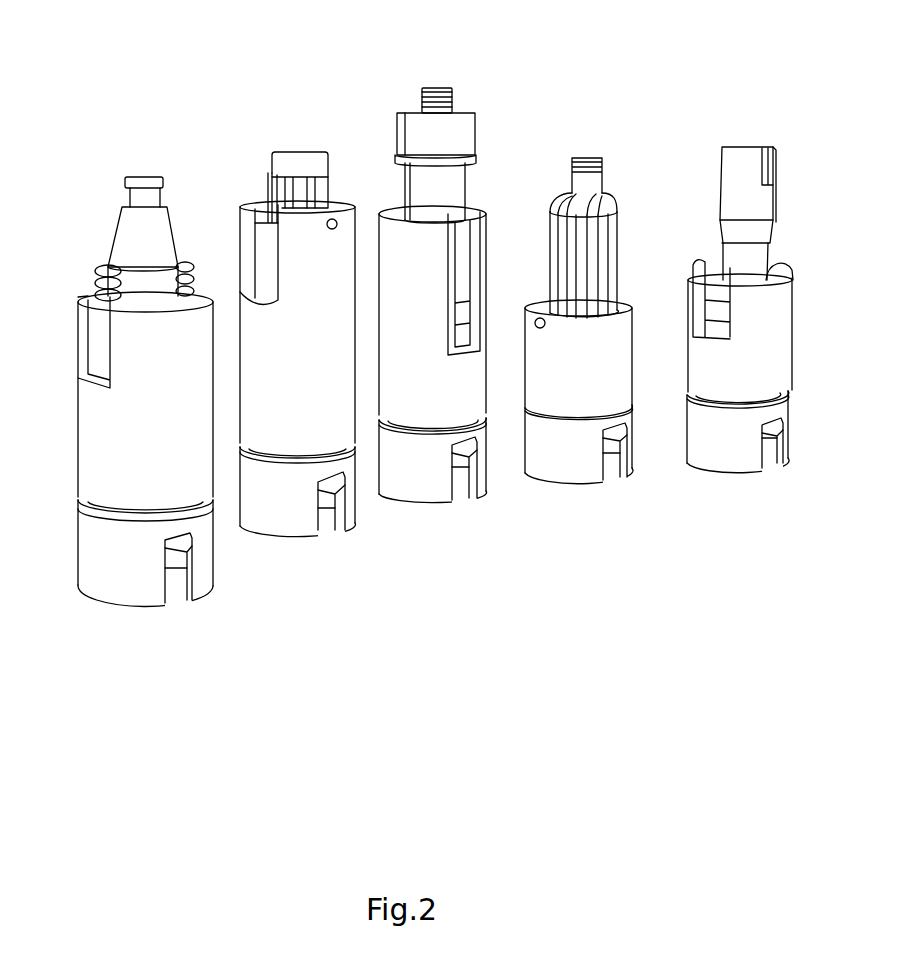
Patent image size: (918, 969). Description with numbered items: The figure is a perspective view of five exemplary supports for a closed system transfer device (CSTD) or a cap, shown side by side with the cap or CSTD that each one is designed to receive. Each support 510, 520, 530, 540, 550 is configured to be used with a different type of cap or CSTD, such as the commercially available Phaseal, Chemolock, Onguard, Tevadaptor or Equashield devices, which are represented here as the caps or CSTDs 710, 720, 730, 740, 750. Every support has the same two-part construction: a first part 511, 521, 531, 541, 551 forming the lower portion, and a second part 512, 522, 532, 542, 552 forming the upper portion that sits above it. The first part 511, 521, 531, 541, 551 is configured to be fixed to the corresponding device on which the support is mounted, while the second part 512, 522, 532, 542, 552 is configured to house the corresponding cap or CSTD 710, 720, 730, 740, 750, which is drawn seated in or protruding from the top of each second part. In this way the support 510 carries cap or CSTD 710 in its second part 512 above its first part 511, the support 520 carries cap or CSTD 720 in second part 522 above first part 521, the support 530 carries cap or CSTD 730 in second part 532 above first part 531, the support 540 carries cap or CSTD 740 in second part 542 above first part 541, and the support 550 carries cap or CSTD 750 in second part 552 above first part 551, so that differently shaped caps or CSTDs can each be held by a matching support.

The support 510 is at (119, 399).
The first part 511 is at (120, 575).
The second part 512 is at (100, 425).
The cap or CSTD 710 is at (135, 236).
The support 520 is at (277, 344).
The first part 521 is at (280, 512).
The second part 522 is at (263, 328).
The cap or CSTD 720 is at (278, 165).
The support 530 is at (437, 309).
The first part 531 is at (415, 478).
The second part 532 is at (405, 243).
The cap or CSTD 730 is at (468, 128).
The support 540 is at (564, 326).
The first part 541 is at (570, 458).
The second part 542 is at (553, 358).
The cap or CSTD 740 is at (578, 183).
The support 550 is at (720, 318).
The first part 551 is at (725, 447).
The second part 552 is at (713, 347).
The cap or CSTD 750 is at (732, 178).